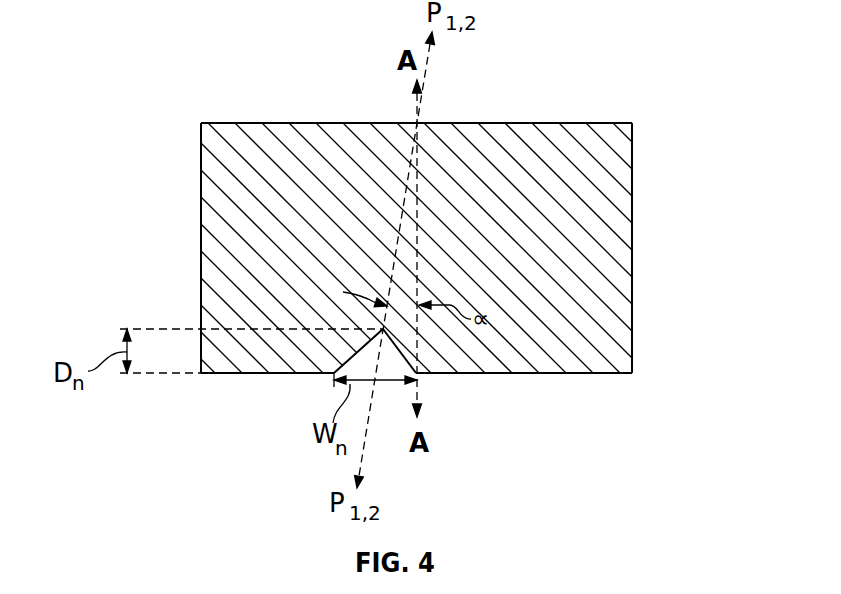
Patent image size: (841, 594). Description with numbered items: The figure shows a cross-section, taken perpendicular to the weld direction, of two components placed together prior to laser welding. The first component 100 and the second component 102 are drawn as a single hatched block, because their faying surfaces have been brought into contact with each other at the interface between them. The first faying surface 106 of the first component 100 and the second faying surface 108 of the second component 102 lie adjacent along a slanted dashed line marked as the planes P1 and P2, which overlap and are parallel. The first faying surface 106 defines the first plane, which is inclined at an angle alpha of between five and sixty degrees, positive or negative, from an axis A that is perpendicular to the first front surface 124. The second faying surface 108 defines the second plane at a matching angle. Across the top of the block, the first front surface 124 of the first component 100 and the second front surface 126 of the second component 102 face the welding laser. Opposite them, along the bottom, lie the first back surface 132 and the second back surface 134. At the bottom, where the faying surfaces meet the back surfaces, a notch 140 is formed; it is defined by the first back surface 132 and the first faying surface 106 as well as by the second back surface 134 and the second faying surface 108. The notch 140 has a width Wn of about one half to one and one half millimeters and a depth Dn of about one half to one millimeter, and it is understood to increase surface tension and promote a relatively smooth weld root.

The first component 100 is at (416, 267).
The second component 102 is at (201, 238).
The first faying surface 106 is at (397, 290).
The second faying surface 108 is at (397, 224).
The first front surface 124 is at (580, 123).
The second front surface 126 is at (222, 123).
The first back surface 132 is at (571, 373).
The second back surface 134 is at (225, 373).
The notch 140 is at (402, 298).